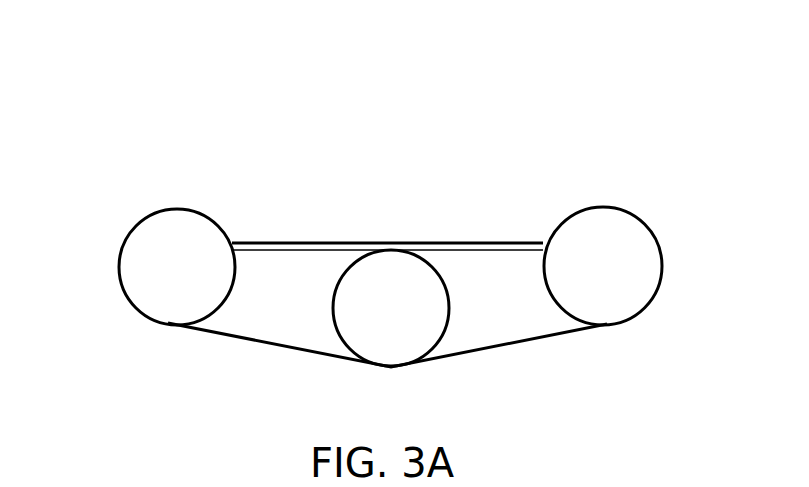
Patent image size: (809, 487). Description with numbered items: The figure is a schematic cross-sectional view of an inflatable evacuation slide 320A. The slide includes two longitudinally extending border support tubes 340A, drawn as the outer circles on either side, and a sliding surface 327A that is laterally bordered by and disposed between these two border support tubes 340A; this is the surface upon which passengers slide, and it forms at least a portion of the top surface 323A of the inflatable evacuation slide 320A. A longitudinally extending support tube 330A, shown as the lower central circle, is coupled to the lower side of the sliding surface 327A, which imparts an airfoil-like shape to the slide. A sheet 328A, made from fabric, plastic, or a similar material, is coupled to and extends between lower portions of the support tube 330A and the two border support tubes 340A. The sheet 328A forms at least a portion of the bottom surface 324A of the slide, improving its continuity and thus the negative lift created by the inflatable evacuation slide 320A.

The inflatable evacuation slide 320A is at (166, 87).
The top surface 323A is at (391, 271).
The bottom surface 324A is at (647, 306).
The sliding surface 327A is at (318, 243).
The sheet 328A is at (252, 342).
The longitudinally extending support tube 330A is at (405, 333).
The longitudinally extending border support tubes 340A is at (148, 272).